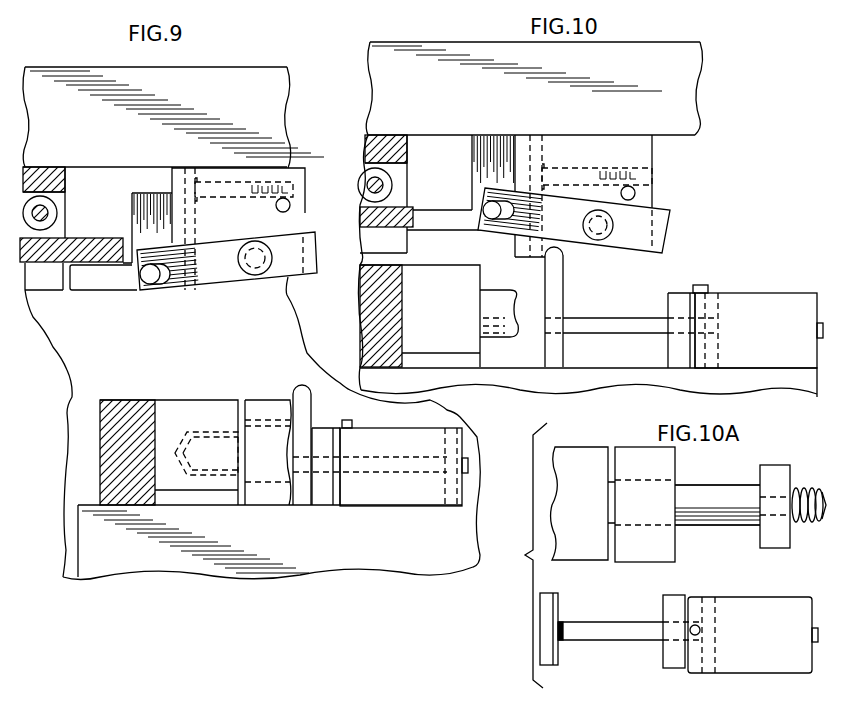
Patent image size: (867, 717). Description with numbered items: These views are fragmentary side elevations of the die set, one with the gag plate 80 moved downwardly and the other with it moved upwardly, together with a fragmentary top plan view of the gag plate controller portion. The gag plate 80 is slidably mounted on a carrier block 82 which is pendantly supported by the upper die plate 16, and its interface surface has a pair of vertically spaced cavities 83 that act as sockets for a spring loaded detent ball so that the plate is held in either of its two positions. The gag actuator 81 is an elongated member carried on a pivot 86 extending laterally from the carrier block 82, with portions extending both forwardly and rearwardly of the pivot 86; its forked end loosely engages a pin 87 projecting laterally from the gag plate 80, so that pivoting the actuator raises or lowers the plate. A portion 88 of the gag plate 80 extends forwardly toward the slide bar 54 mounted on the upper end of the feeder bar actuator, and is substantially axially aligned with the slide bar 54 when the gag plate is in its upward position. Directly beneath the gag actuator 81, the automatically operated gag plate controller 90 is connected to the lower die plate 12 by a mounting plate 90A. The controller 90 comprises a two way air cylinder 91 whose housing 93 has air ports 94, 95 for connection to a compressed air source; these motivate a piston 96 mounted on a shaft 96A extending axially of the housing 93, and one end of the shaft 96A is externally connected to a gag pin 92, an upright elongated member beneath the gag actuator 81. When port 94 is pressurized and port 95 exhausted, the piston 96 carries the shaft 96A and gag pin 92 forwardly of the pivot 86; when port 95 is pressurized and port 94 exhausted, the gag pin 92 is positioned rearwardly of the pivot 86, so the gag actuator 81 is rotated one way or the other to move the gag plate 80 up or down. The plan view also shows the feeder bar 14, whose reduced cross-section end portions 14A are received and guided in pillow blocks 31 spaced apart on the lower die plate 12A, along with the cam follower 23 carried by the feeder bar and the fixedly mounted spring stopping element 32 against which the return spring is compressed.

In FIG. 9, the lower die plate 12 is at (209, 543).
In FIG. 10, the base 12A is at (588, 382).
In FIG. 10A, the feeder bar 14 is at (580, 535).
In FIG. 10, the end portions of the feeder bar 14A is at (495, 309).
In FIG. 10A, the end portions of the feeder bar 14A is at (722, 510).
In FIG. 9, the upper die plate 16 is at (158, 113).
In FIG. 10, the upper die plate 16 is at (540, 99).
In FIG. 10A, the cam follower 23 is at (805, 490).
In FIG. 10A, the pillow blocks 31 is at (660, 469).
In FIG. 10A, the spring stopping element 32 is at (773, 477).
In FIG. 9, the slide bar 54 is at (82, 252).
In FIG. 9, the gag plate 80 is at (155, 210).
In FIG. 10, the gag plate 80 is at (482, 158).
In FIG. 9, the gag actuator 81 is at (229, 271).
In FIG. 10, the gag actuator 81 is at (658, 212).
In FIG. 9, the carrier block 82 is at (230, 187).
In FIG. 10, the carrier block 82 is at (590, 160).
In FIG. 9, the cavities 83 is at (197, 231).
In FIG. 10, the cavities 83 is at (548, 137).
In FIG. 9, the pivot 86 is at (253, 276).
In FIG. 10, the pivot 86 is at (602, 224).
In FIG. 9, the pin 87 is at (147, 284).
In FIG. 10, the pin 87 is at (482, 207).
In FIG. 9, the gag plate portion 88 is at (88, 276).
In FIG. 9, the gag plate controller 90 is at (403, 470).
In FIG. 10, the gag plate controller 90 is at (684, 313).
In FIG. 10A, the gag plate controller 90 is at (688, 622).
In FIG. 9, the mounting plate 90A is at (323, 495).
In FIG. 10, the mounting plate 90A is at (677, 360).
In FIG. 10A, the mounting plate 90A is at (674, 631).
In FIG. 9, the air cylinder 91 is at (428, 496).
In FIG. 10, the air cylinder 91 is at (776, 330).
In FIG. 10A, the air cylinder 91 is at (762, 632).
In FIG. 9, the gag pin 92 is at (310, 388).
In FIG. 10, the gag pin 92 is at (555, 273).
In FIG. 10A, the gag pin 92 is at (552, 650).
In FIG. 9, the housing 93 is at (403, 432).
In FIG. 10, the housing 93 is at (768, 293).
In FIG. 10A, the housing 93 is at (762, 598).
In FIG. 9, the air port 94 is at (467, 466).
In FIG. 10, the air port 94 is at (818, 331).
In FIG. 10A, the air port 94 is at (810, 633).
In FIG. 9, the air port 95 is at (345, 420).
In FIG. 10, the air port 95 is at (702, 285).
In FIG. 10A, the air port 95 is at (697, 625).
In FIG. 9, the piston 96 is at (452, 498).
In FIG. 10, the piston 96 is at (718, 351).
In FIG. 10A, the piston 96 is at (708, 661).
In FIG. 9, the shaft 96A is at (402, 466).
In FIG. 10, the shaft 96A is at (582, 322).
In FIG. 10A, the shaft 96A is at (610, 634).